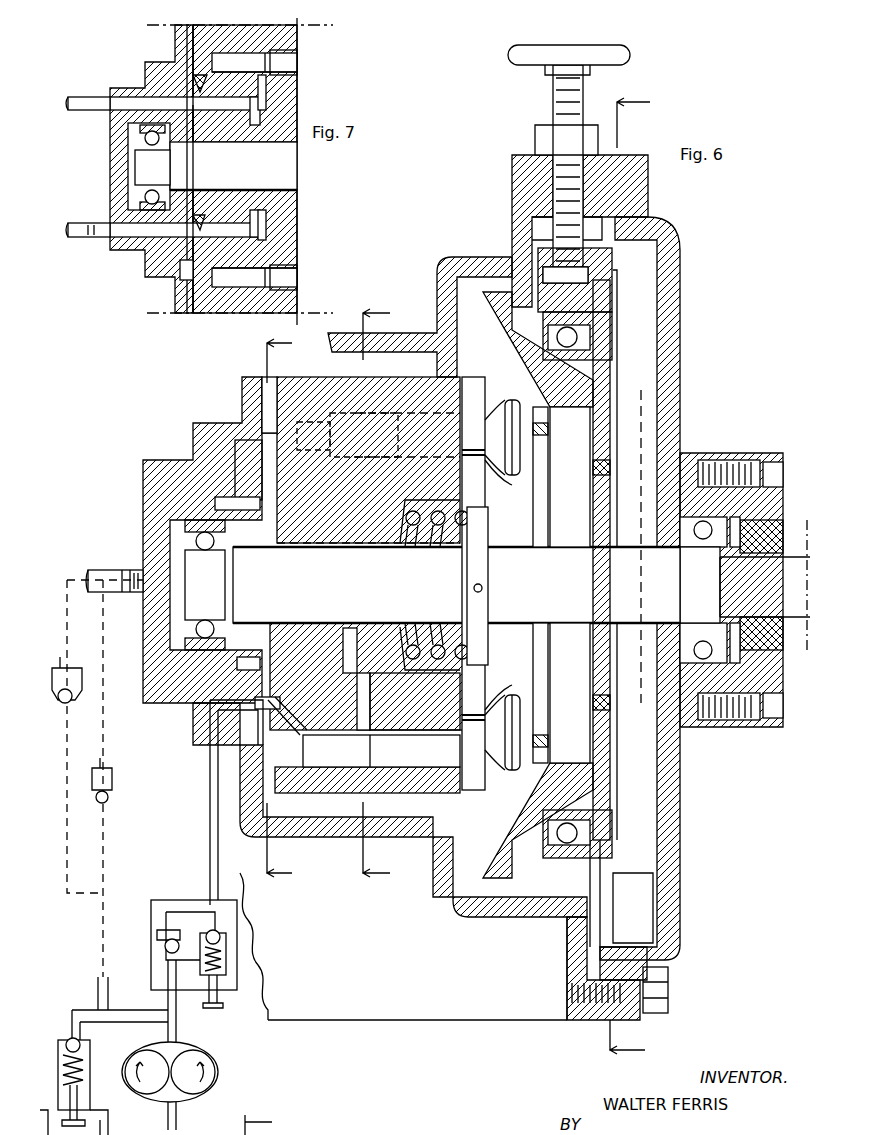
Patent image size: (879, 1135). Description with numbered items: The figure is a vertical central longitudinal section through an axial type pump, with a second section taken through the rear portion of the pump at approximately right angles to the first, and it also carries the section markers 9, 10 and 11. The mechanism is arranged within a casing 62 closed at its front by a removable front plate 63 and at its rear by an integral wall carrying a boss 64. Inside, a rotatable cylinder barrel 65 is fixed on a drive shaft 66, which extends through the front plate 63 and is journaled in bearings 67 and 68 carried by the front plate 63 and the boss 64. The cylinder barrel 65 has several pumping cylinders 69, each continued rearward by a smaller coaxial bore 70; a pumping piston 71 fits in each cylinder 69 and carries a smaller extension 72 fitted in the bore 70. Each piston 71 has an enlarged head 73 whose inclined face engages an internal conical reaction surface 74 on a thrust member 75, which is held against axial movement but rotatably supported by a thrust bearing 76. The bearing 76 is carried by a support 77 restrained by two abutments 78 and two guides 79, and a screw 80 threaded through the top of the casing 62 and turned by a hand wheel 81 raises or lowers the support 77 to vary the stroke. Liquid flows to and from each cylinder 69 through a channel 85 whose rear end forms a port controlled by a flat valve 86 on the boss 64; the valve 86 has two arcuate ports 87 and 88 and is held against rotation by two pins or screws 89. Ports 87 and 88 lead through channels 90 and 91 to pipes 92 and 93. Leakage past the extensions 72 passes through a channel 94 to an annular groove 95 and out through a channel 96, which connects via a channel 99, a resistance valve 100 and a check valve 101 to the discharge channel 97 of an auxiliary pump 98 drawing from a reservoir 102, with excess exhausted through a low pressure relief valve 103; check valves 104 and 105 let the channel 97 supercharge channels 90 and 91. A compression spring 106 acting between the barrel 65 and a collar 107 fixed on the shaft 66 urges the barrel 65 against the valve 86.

In FIG. 6, the section line 9- 9 is at (637, 577).
In FIG. 6, the section line 10- 10 is at (389, 594).
In FIG. 6, the section line 11- 11 is at (292, 609).
In FIG. 6, the casing 62 is at (465, 262).
In FIG. 6, the front plate 63 is at (637, 210).
In FIG. 6, the boss 64 is at (200, 425).
In FIG. 7, the boss 64 is at (145, 62).
In FIG. 6, the cylinder barrel 65 is at (335, 518).
In FIG. 7, the cylinder barrel 65 is at (282, 225).
In FIG. 6, the drive shaft 66 is at (627, 578).
In FIG. 7, the drive shaft 66 is at (278, 162).
In FIG. 6, the bearing 67 is at (688, 560).
In FIG. 6, the bearing 68 is at (205, 553).
In FIG. 7, the bearing 68 is at (152, 167).
In FIG. 6, the pumping cylinder 69 is at (385, 415).
In FIG. 7, the pumping cylinder 69 is at (288, 72).
In FIG. 6, the non-pumping bore 70 is at (315, 415).
In FIG. 7, the non-pumping bore 70 is at (215, 62).
In FIG. 6, the pumping piston 71 is at (382, 760).
In FIG. 7, the pumping piston 71 is at (288, 52).
In FIG. 6, the piston extension 72 is at (338, 418).
In FIG. 7, the piston extension 72 is at (277, 170).
In FIG. 6, the piston head 73 is at (512, 476).
In FIG. 6, the conical reaction surface 74 is at (512, 705).
In FIG. 6, the thrust member 75 is at (512, 795).
In FIG. 6, the thrust bearing 76 is at (568, 700).
In FIG. 6, the support 77 is at (612, 297).
In FIG. 6, the abutment 78 is at (640, 372).
In FIG. 6, the guide 79 is at (641, 410).
In FIG. 6, the screw 80 is at (583, 95).
In FIG. 6, the hand wheel 81 is at (630, 57).
In FIG. 6, the channel 85 is at (358, 682).
In FIG. 7, the channel 85 is at (238, 100).
In FIG. 6, the flat valve 86 is at (252, 481).
In FIG. 7, the flat valve 86 is at (186, 128).
In FIG. 7, the arcuate port 87 is at (210, 82).
In FIG. 7, the arcuate port 88 is at (209, 216).
In FIG. 6, the pin or screw 89 is at (255, 510).
In FIG. 7, the channel 90 is at (140, 103).
In FIG. 7, the channel 91 is at (122, 248).
In FIG. 6, the pipe 92 is at (98, 570).
In FIG. 7, the pipe 92 is at (85, 100).
In FIG. 6, the pipe 93 is at (130, 570).
In FIG. 7, the pipe 93 is at (95, 228).
In FIG. 6, the channel 94 is at (292, 720).
In FIG. 7, the channel 94 is at (188, 62).
In FIG. 6, the annular groove 95 is at (258, 460).
In FIG. 7, the annular groove 95 is at (180, 275).
In FIG. 6, the channel 96 is at (213, 728).
In FIG. 6, the discharge channel 97 is at (92, 622).
In FIG. 6, the auxiliary pump 98 is at (212, 1078).
In FIG. 6, the channel 99 is at (208, 812).
In FIG. 6, the resistance valve 100 is at (222, 950).
In FIG. 6, the check valve 101 is at (163, 938).
In FIG. 6, the reservoir 102 is at (277, 1124).
In FIG. 6, the low pressure relief valve 103 is at (70, 1042).
In FIG. 6, the check valve 104 is at (68, 682).
In FIG. 6, the check valve 105 is at (112, 787).
In FIG. 6, the compression spring 106 is at (432, 532).
In FIG. 6, the collar 107 is at (481, 560).